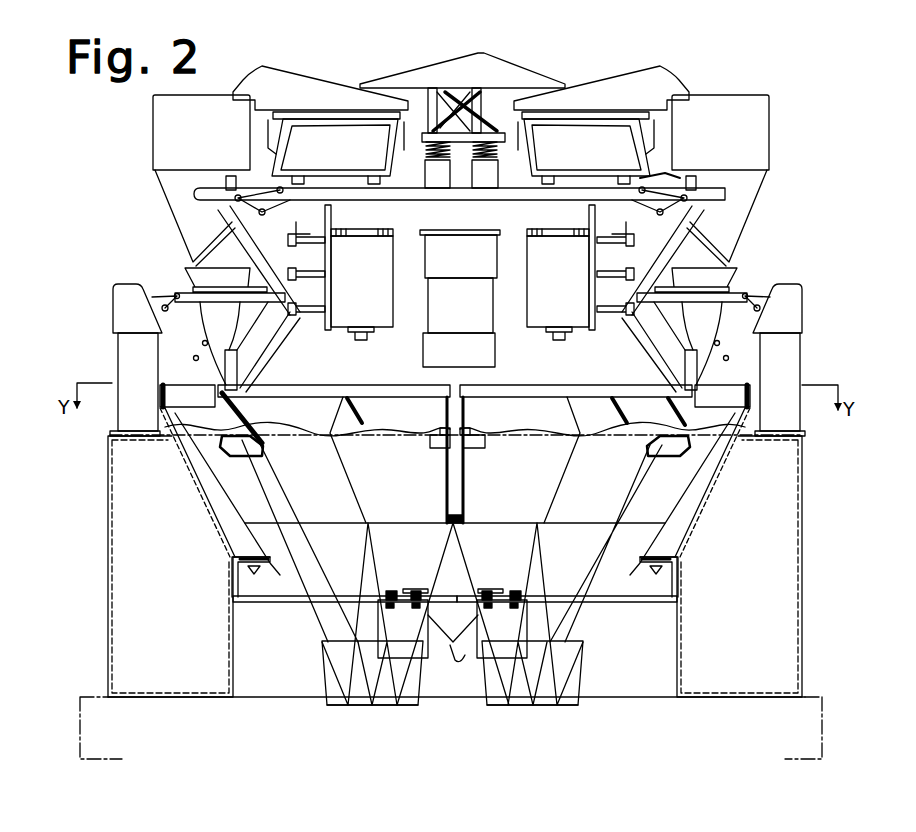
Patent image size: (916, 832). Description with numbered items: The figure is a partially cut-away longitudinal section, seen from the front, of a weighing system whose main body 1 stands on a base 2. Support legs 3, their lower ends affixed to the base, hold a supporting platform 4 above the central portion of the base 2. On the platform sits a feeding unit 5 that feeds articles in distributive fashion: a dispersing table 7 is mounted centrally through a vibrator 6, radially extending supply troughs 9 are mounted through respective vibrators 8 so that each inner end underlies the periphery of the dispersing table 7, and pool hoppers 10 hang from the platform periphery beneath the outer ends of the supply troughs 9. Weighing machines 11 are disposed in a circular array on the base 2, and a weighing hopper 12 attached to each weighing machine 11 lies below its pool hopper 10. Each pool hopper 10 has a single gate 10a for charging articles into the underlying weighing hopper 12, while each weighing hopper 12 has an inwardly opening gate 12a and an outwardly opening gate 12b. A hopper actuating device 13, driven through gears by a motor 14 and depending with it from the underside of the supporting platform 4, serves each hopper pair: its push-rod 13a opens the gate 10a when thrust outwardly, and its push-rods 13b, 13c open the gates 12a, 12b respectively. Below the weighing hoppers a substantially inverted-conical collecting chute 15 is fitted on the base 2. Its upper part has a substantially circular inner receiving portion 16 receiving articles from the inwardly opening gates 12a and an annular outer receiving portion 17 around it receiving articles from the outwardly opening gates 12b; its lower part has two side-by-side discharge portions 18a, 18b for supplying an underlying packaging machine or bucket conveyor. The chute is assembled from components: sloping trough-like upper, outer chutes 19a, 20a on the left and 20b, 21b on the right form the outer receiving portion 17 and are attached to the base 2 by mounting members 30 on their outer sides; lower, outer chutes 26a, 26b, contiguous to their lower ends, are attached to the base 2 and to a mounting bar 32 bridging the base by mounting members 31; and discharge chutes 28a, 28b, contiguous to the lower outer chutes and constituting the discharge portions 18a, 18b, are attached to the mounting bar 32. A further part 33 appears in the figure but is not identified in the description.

The main body 1 is at (793, 185).
The base 2 is at (820, 477).
The support legs 3 is at (182, 390).
The supporting platform 4 is at (410, 186).
The feeding unit 5 is at (570, 78).
The vibrator 6 is at (499, 112).
The dispersing table 7 is at (505, 66).
The vibrators 8 is at (383, 138).
The supply troughs 9 is at (353, 78).
The pool hoppers 10 is at (160, 204).
The gate 10a is at (188, 245).
The weighing machines 11 is at (116, 368).
The weighing hopper 12 is at (182, 271).
The inwardly opening gate 12a is at (262, 362).
The outwardly opening gate 12b is at (208, 325).
The hopper actuating device 13 is at (385, 302).
The push-rod 13a is at (280, 238).
The push-rod 13b is at (286, 274).
The push-rod 13c is at (303, 326).
The motor 14 is at (488, 353).
The collecting chute 15 is at (318, 632).
The inner receiving portion 16 is at (290, 405).
The outer receiving portion 17 is at (178, 390).
The discharge portion 18a is at (366, 710).
The discharge portion 18b is at (528, 710).
The upper, outer chute 19a is at (235, 525).
The upper, outer chute 20a is at (213, 470).
The upper, outer chute 20b is at (697, 470).
The upper, outer chute 21b is at (682, 525).
The lower, outer chute 26a is at (312, 608).
The lower, outer chute 26b is at (616, 616).
The discharge chute 28a is at (320, 692).
The discharge chute 28b is at (582, 692).
The mounting members 30 is at (265, 450).
The mounting members 31 is at (258, 576).
The mounting bar 32 is at (565, 590).
The connecting member 33 is at (455, 660).